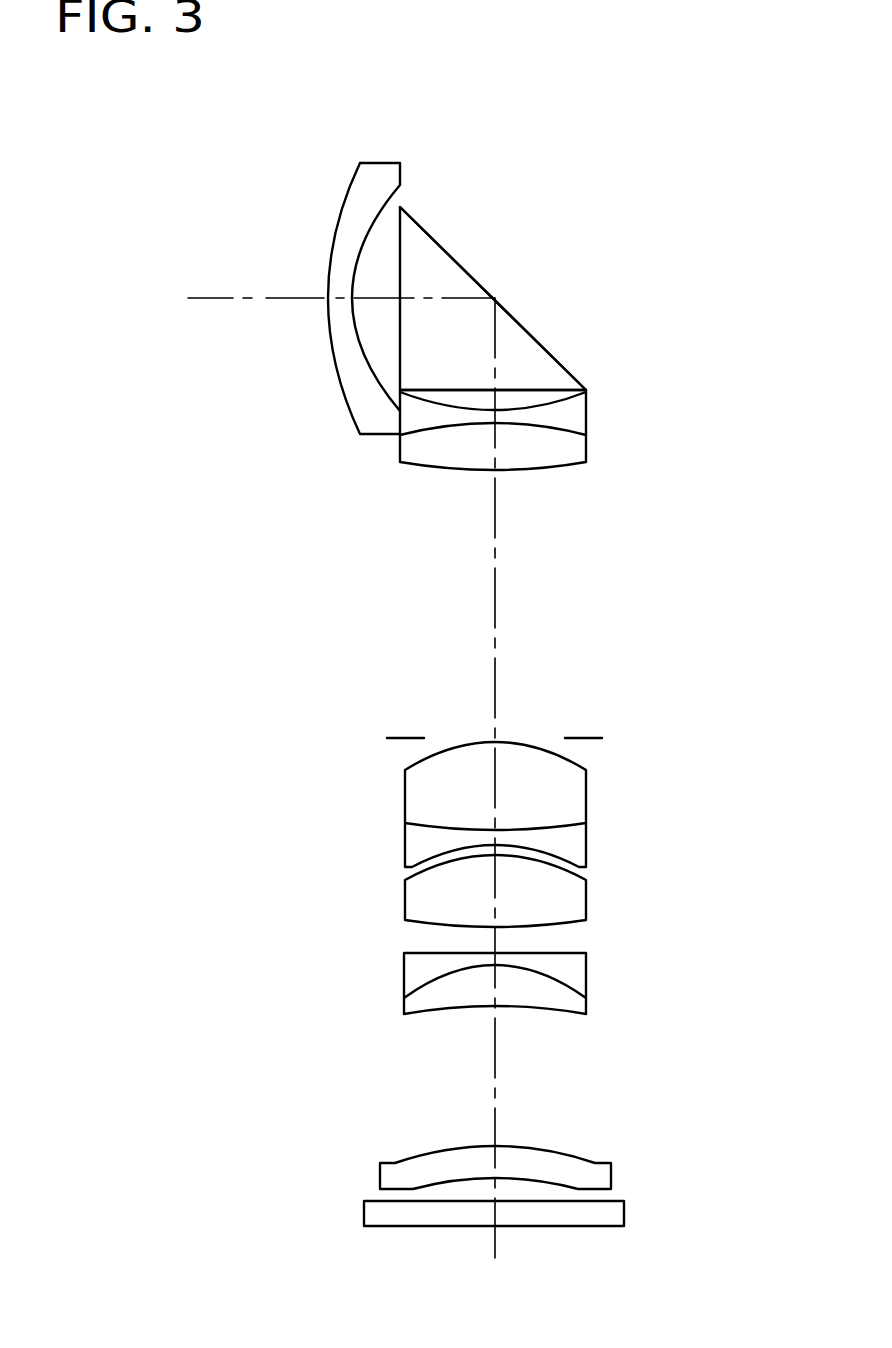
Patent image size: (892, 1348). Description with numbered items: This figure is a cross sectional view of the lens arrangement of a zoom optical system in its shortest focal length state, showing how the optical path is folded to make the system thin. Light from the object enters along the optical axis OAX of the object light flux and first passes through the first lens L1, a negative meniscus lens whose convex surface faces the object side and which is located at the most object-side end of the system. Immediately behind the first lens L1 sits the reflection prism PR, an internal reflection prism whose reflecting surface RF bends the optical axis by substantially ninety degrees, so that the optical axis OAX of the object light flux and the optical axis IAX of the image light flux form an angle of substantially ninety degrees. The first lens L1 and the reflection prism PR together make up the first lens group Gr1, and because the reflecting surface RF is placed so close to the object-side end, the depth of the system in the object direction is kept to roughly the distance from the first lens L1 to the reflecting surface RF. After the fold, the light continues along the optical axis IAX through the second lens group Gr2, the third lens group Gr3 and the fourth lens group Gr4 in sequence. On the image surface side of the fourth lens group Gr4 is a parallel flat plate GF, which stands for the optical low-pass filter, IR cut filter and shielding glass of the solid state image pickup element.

The first lens L1 is at (383, 163).
The reflection prism PR is at (433, 259).
The reflecting surface RF is at (545, 343).
The optical axis of object light flux OAX is at (341, 281).
The optical axis of image light flux IAX is at (522, 785).
The first lens group Gr1 is at (545, 288).
The second lens group Gr2 is at (680, 740).
The third lens group Gr3 is at (680, 953).
The fourth lens group Gr4 is at (563, 1226).
The parallel flat plate GF is at (613, 1227).